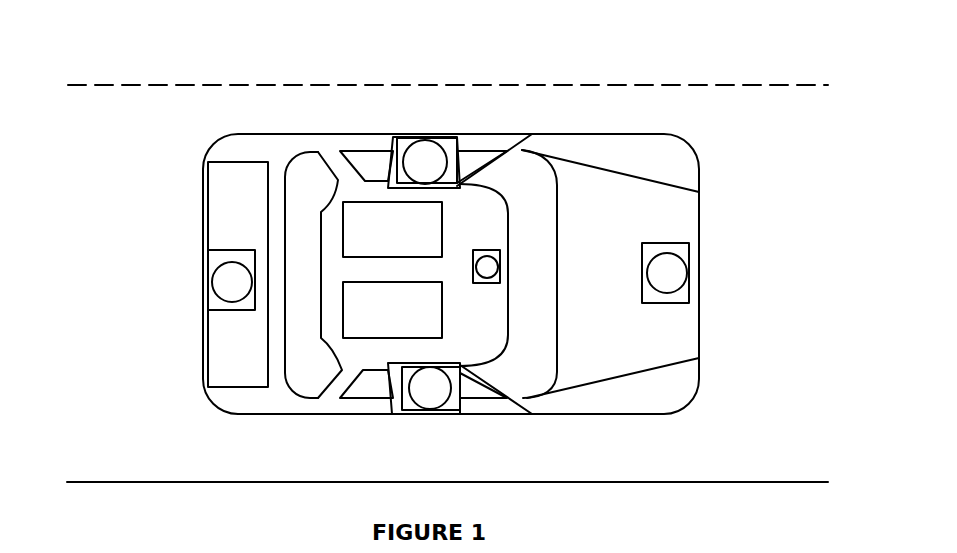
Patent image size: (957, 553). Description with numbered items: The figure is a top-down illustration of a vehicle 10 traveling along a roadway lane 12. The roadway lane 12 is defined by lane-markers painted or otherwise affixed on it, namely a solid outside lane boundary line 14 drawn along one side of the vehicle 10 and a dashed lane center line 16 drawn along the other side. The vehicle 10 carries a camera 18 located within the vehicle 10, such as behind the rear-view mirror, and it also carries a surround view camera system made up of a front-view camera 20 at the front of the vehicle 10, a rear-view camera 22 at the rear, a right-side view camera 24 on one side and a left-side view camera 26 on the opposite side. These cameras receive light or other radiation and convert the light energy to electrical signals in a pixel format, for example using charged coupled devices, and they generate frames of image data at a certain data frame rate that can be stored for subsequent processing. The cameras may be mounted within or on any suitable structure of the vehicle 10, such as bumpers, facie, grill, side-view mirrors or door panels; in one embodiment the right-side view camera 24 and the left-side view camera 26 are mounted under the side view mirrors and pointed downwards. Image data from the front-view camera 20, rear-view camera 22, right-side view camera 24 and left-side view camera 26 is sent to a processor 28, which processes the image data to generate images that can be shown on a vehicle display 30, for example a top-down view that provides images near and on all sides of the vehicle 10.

The vehicle 10 is at (198, 190).
The roadway lane 12 is at (137, 348).
The solid outside lane boundary line 14 is at (203, 482).
The dashed lane center line 16 is at (498, 85).
The camera 18 is at (500, 267).
The front-view camera 20 is at (667, 273).
The rear-view camera 22 is at (233, 282).
The right-side view camera 24 is at (430, 388).
The left-side view camera 26 is at (425, 162).
The processor 28 is at (392, 229).
The vehicle display 30 is at (392, 310).